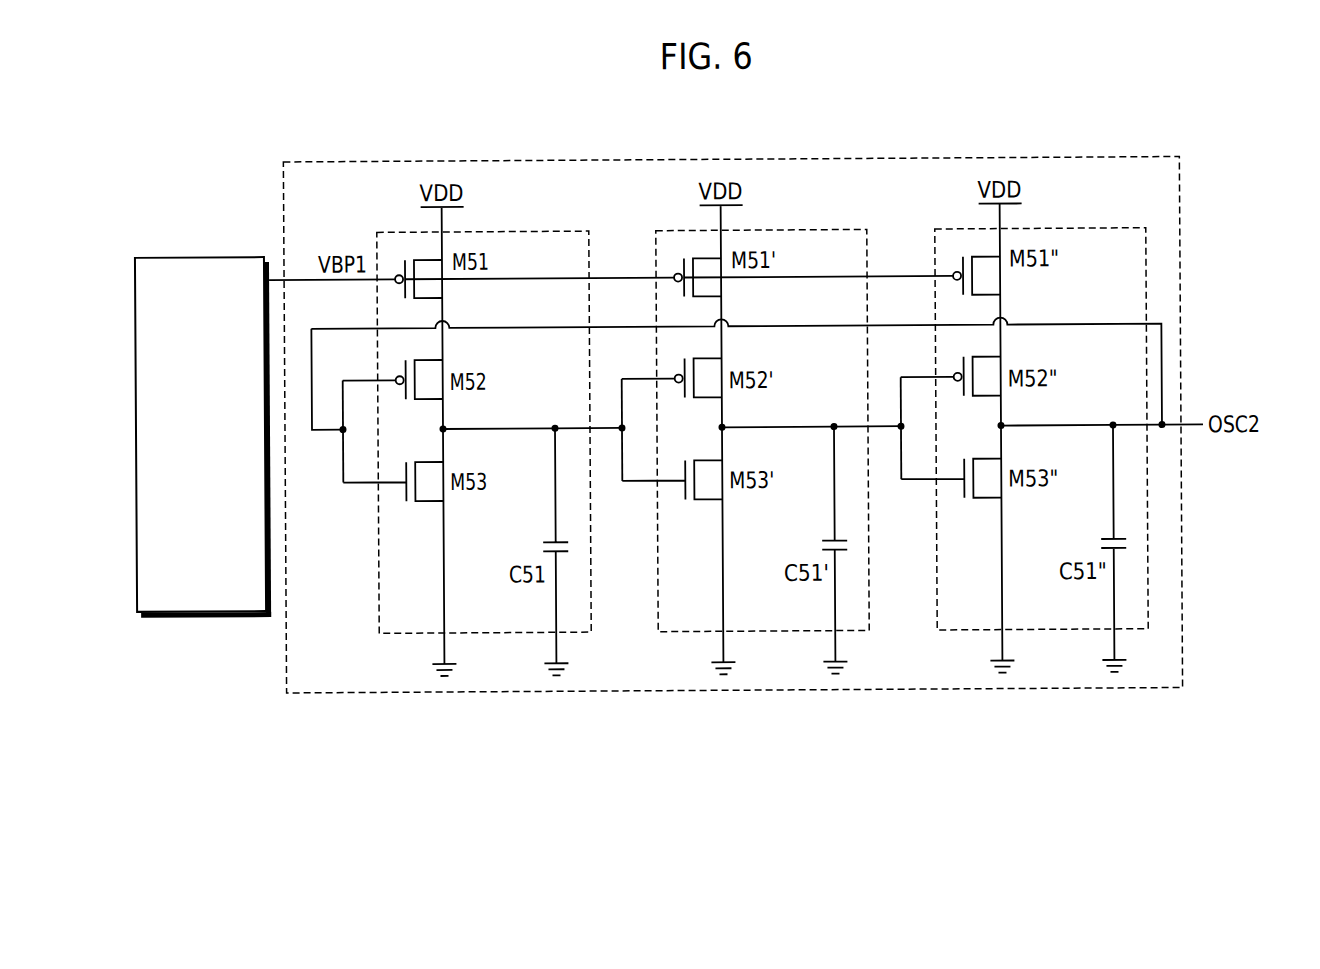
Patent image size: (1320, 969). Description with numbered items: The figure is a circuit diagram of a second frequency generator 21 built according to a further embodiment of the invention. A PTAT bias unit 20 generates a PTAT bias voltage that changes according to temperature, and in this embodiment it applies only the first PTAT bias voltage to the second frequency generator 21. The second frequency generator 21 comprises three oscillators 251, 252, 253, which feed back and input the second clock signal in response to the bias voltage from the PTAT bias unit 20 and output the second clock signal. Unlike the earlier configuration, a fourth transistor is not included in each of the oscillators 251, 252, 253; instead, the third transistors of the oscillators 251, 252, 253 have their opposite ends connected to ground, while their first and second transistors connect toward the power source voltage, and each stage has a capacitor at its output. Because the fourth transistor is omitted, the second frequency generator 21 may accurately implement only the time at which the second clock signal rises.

The PTAT bias unit 20 is at (229, 256).
The second frequency generator 21 is at (643, 161).
The oscillator 251 is at (531, 232).
The oscillator 252 is at (813, 232).
The oscillator 253 is at (1092, 232).